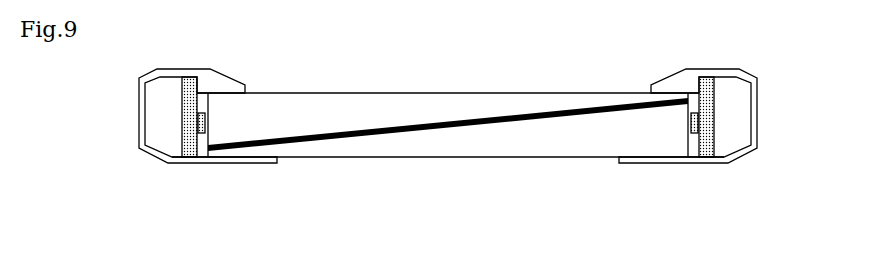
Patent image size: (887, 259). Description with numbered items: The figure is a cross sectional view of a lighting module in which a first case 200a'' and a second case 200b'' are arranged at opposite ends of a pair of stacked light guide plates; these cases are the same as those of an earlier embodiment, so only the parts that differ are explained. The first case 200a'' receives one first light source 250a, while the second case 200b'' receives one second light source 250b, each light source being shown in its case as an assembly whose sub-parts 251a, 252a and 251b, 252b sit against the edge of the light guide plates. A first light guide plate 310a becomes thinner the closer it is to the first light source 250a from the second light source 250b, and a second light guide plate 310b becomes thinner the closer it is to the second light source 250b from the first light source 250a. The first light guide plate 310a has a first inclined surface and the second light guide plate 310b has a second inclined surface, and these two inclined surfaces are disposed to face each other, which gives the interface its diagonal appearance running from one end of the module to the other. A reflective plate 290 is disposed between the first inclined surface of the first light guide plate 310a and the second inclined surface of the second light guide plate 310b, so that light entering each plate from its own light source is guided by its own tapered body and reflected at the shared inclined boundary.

The second case 200b'' is at (157, 116).
The first case 200a'' is at (735, 116).
The second light source 250b is at (210, 163).
The second fixing member 251b is at (201, 148).
The second cushion member 252b is at (190, 150).
The first light source 250a is at (684, 163).
The first fixing member 251a is at (693, 140).
The first cushion member 252a is at (710, 148).
The first light guide plate 310a is at (330, 108).
The second light guide plate 310b is at (528, 148).
The reflective plate 290 is at (568, 109).